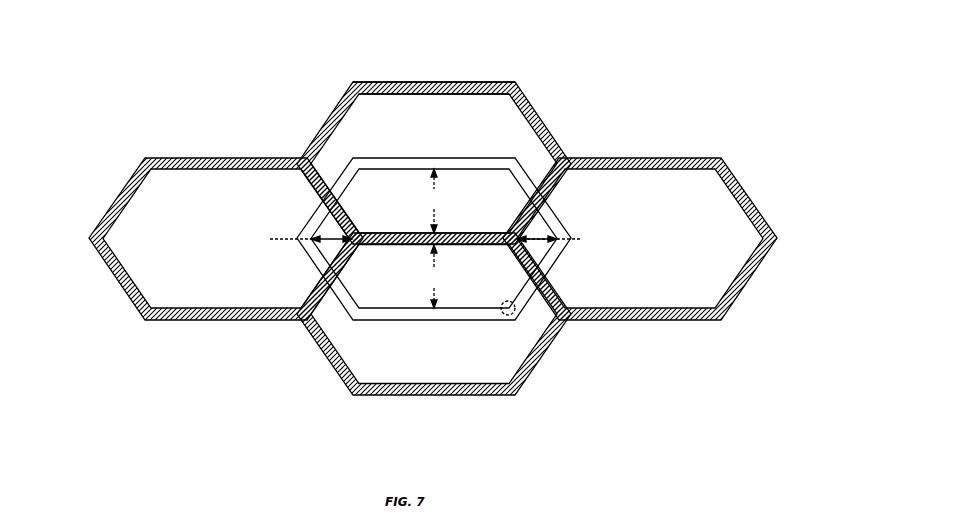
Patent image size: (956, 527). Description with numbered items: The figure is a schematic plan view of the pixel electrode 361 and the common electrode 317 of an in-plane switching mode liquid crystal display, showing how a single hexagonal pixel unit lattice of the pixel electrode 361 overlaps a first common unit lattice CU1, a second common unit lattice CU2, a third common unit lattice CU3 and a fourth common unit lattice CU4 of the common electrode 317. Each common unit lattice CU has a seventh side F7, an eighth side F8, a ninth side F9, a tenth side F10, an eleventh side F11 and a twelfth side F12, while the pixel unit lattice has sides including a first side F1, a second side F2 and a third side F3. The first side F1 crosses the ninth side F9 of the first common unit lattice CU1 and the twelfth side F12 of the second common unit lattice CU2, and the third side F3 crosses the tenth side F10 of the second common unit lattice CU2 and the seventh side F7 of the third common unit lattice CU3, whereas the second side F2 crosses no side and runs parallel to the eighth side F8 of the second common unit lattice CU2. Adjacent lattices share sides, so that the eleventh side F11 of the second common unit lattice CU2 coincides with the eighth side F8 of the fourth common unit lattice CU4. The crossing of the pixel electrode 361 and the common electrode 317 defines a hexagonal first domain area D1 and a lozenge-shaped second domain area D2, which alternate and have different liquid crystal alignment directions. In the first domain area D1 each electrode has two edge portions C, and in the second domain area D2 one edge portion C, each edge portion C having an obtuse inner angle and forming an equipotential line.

The first common unit lattice CU1 is at (90, 204).
The second common unit lattice CU2 is at (445, 70).
The third common unit lattice CU3 is at (754, 303).
The fourth common unit lattice CU4 is at (461, 409).
The common unit lattice CU is at (455, 148).
The common electrode 317 is at (483, 80).
The pixel electrode 361 is at (418, 156).
The first domain area D1 is at (435, 238).
The second domain area D2 is at (434, 232).
The edge portion C is at (366, 248).
The first side F1 is at (350, 187).
The second side F2 is at (468, 168).
The third side F3 is at (520, 185).
The seventh side F7 is at (138, 191).
The eighth side F8 is at (215, 168).
The ninth side F9 is at (318, 190).
The tenth side F10 is at (313, 297).
The eleventh side F11 is at (180, 307).
The twelfth side F12 is at (143, 290).